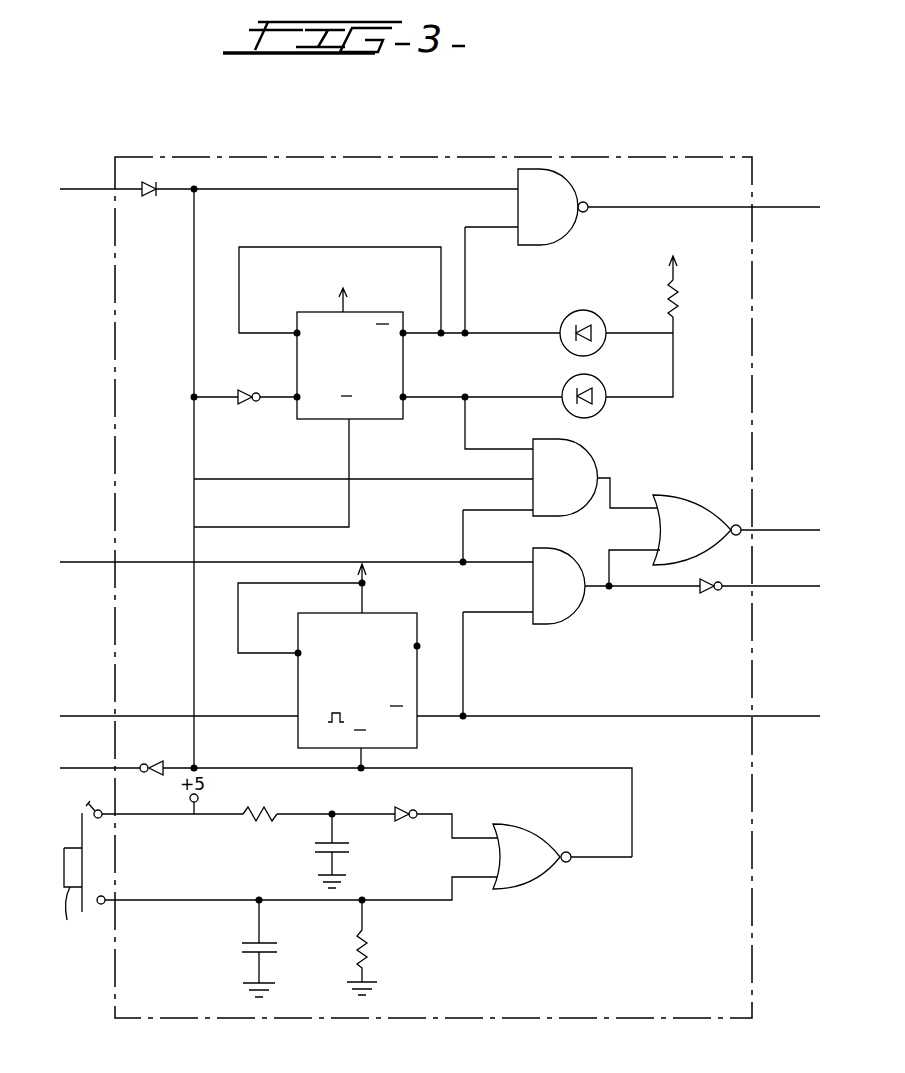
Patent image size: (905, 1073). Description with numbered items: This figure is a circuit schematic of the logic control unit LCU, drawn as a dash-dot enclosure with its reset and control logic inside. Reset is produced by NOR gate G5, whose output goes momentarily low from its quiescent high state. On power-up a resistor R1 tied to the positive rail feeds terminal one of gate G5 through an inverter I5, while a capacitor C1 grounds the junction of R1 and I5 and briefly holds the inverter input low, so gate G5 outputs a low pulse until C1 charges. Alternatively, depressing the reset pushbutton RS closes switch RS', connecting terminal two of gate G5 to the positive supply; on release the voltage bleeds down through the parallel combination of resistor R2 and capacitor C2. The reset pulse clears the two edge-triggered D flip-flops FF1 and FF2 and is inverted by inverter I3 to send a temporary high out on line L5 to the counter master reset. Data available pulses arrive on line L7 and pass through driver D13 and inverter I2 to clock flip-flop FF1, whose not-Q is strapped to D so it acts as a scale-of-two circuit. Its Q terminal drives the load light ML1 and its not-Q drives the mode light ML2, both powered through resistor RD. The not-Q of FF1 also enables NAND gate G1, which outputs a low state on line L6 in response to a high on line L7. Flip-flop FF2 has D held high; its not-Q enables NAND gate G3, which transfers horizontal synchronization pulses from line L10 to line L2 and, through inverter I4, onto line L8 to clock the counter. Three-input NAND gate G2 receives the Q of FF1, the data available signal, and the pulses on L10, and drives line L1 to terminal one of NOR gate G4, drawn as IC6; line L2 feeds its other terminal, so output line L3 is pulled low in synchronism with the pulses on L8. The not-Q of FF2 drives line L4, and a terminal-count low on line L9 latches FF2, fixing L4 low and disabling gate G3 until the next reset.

The logic control unit LCU is at (290, 157).
The line L7 is at (96, 189).
The driver D13 is at (150, 197).
The NAND gate G1 is at (575, 196).
The line L6 is at (790, 207).
The flip-flop FF1 is at (358, 420).
The inverter I2 is at (245, 404).
The indicator mode light ML2 is at (568, 314).
The load light ML1 is at (562, 388).
The resistor RD is at (684, 274).
The three input NAND gate G2 is at (570, 442).
The line L1 is at (603, 478).
The NAND gate G3 is at (556, 548).
The line L2 is at (594, 590).
The NOR gate G4 is at (694, 495).
The integrated circuit IC6 is at (685, 531).
The line L3 is at (770, 530).
The inverter I4 is at (710, 580).
The line L8 is at (772, 586).
The line L10 is at (72, 548).
The flip-flop FF2 is at (405, 612).
The line L9 is at (102, 716).
The line L4 is at (808, 716).
The line L5 is at (102, 768).
The inverter I3 is at (158, 761).
The switch RS' is at (99, 798).
The reset pushbutton RS is at (76, 880).
The resistor R1 is at (262, 807).
The capacitor C1 is at (318, 846).
The inverter I5 is at (406, 807).
The NOR gate G5 is at (522, 824).
The capacitor C2 is at (248, 938).
The resistor R2 is at (355, 938).